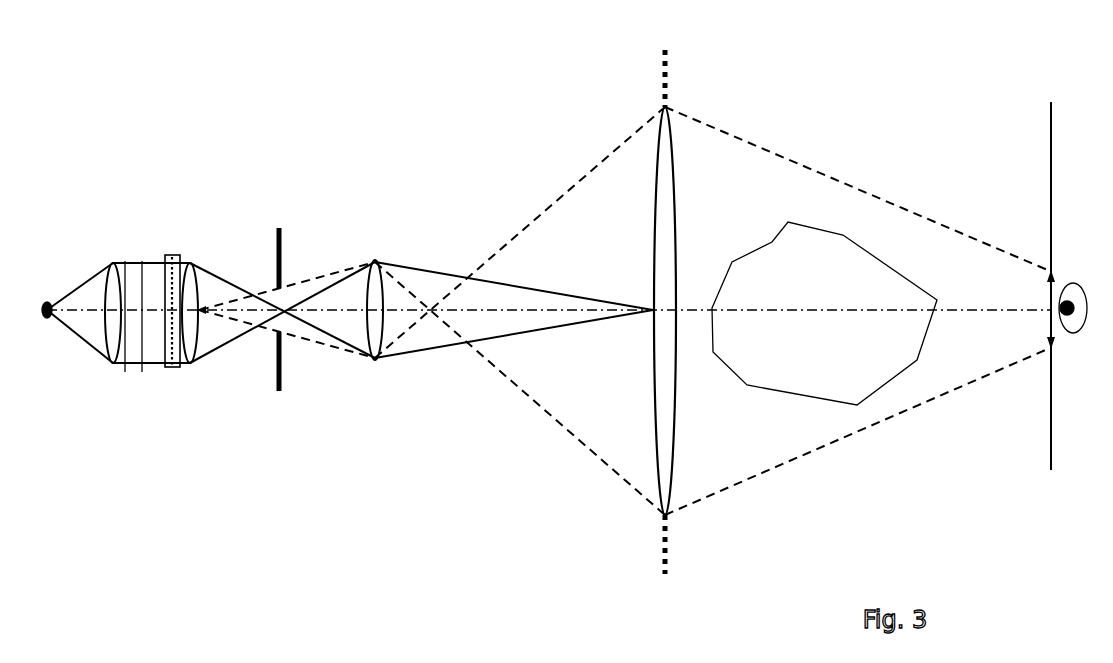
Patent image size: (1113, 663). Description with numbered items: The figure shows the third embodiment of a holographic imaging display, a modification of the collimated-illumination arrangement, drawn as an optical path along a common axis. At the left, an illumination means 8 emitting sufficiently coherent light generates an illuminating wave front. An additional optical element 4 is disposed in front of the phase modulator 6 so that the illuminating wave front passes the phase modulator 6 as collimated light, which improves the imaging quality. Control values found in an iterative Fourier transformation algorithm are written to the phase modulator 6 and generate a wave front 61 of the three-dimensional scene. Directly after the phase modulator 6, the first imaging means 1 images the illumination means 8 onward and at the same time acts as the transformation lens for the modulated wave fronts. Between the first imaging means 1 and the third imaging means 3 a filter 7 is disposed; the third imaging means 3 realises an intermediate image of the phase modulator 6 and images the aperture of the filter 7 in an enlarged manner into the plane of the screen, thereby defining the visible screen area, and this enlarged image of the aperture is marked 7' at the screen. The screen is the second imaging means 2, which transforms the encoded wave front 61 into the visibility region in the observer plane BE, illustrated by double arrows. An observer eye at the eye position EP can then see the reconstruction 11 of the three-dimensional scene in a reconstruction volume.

The illumination means 8 is at (49, 303).
The additional optical element 4 is at (114, 263).
The phase modulator 6 is at (172, 369).
The wave front 61 is at (170, 343).
The first imaging means 1 is at (197, 357).
The filter 7 is at (306, 357).
The third imaging means 3 is at (383, 360).
The second imaging means 2 is at (667, 195).
The image of slit aperture 7' is at (663, 316).
The reconstruction 11 is at (770, 262).
The eye position EP is at (1066, 295).
The observer plane BE is at (1058, 307).